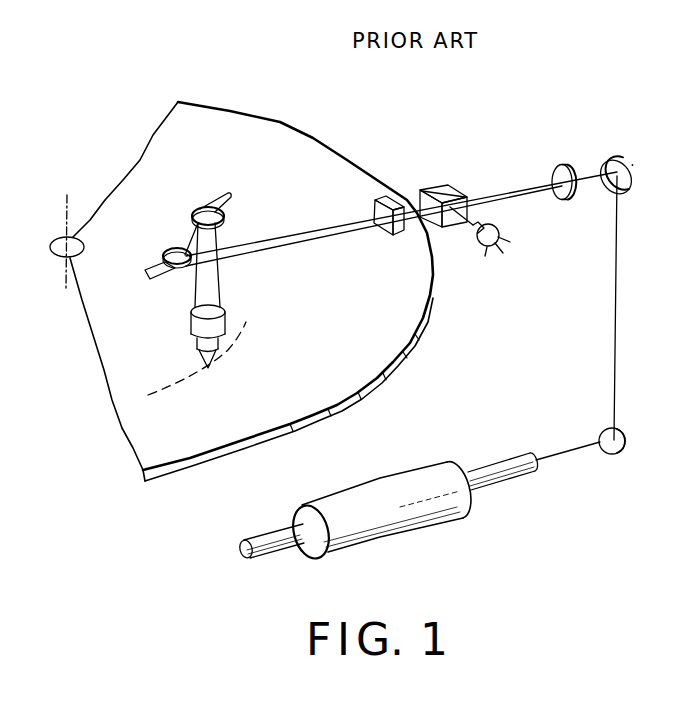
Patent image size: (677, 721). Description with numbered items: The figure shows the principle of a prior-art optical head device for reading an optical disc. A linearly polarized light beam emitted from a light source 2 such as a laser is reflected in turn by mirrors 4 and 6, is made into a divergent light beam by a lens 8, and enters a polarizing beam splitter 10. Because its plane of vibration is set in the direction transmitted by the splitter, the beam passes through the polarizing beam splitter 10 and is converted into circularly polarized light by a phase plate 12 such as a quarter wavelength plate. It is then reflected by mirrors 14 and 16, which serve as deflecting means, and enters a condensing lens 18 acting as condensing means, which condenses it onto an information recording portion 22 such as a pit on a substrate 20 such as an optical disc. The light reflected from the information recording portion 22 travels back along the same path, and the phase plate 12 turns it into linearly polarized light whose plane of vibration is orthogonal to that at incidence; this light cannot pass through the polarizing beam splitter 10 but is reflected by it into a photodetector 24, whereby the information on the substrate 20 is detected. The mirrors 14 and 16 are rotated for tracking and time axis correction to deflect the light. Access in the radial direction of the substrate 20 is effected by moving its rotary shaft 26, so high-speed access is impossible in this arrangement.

The light source 2 is at (396, 533).
The mirror 4 is at (627, 445).
The mirror 6 is at (612, 157).
The lens 8 is at (562, 164).
The polarizing beam splitter 10 is at (443, 185).
The phase plate 12 is at (373, 208).
The mirror 14 is at (170, 272).
The mirror 16 is at (228, 213).
The condensing lens 18 is at (226, 318).
The substrate 20 is at (291, 134).
The information recording portion 22 is at (242, 342).
The photodetector 24 is at (488, 250).
The rotary shaft 26 is at (85, 246).